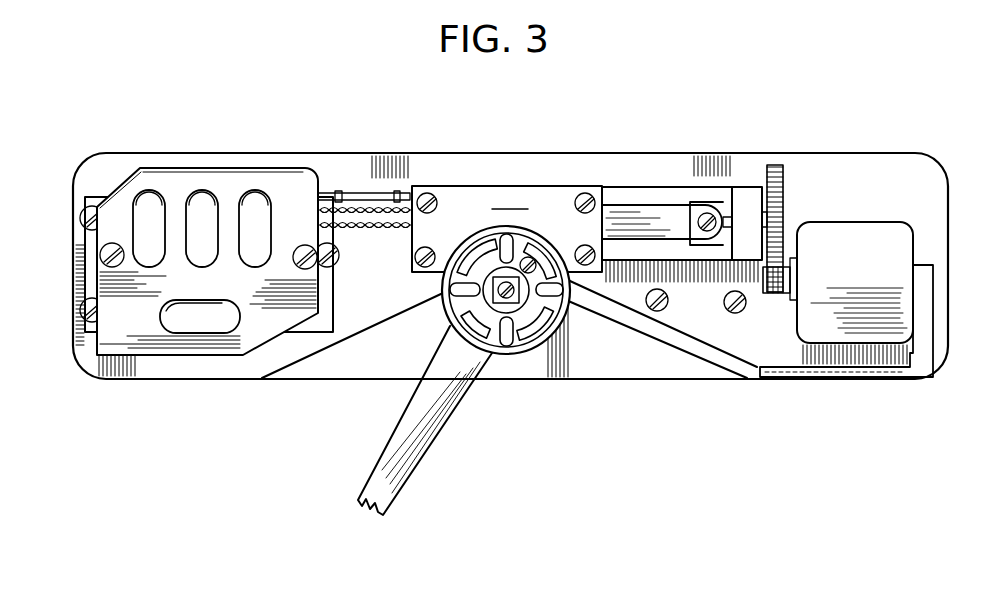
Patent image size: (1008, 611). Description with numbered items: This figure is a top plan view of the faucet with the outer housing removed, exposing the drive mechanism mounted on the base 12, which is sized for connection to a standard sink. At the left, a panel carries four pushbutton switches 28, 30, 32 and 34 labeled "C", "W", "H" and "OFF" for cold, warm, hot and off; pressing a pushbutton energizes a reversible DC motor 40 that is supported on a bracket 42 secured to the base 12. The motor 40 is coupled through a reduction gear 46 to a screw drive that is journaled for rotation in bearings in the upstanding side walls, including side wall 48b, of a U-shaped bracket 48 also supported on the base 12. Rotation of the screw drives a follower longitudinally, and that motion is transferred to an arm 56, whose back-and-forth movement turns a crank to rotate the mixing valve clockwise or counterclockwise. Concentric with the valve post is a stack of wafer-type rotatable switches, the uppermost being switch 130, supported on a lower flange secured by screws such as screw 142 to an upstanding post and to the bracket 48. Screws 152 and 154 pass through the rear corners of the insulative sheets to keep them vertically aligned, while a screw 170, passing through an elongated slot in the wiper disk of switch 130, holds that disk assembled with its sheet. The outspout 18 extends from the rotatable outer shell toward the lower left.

The base 12 is at (653, 358).
The outspout 18 is at (400, 488).
The pushbutton switch 28 is at (148, 207).
The pushbutton switch 30 is at (208, 207).
The pushbutton switch 32 is at (252, 207).
The pushbutton switch 34 is at (175, 325).
The reversible DC motor 40 is at (841, 271).
The bracket 42 is at (850, 372).
The reduction gear 46 is at (783, 182).
The U-shaped bracket 48 is at (723, 185).
The upstanding side wall 48b is at (752, 183).
The arm 56 is at (670, 215).
The wafer-type rotatable switch 130 is at (553, 358).
The screw 142 is at (590, 247).
The screw 152 is at (428, 195).
The screw 154 is at (585, 195).
The screw 170 is at (537, 270).